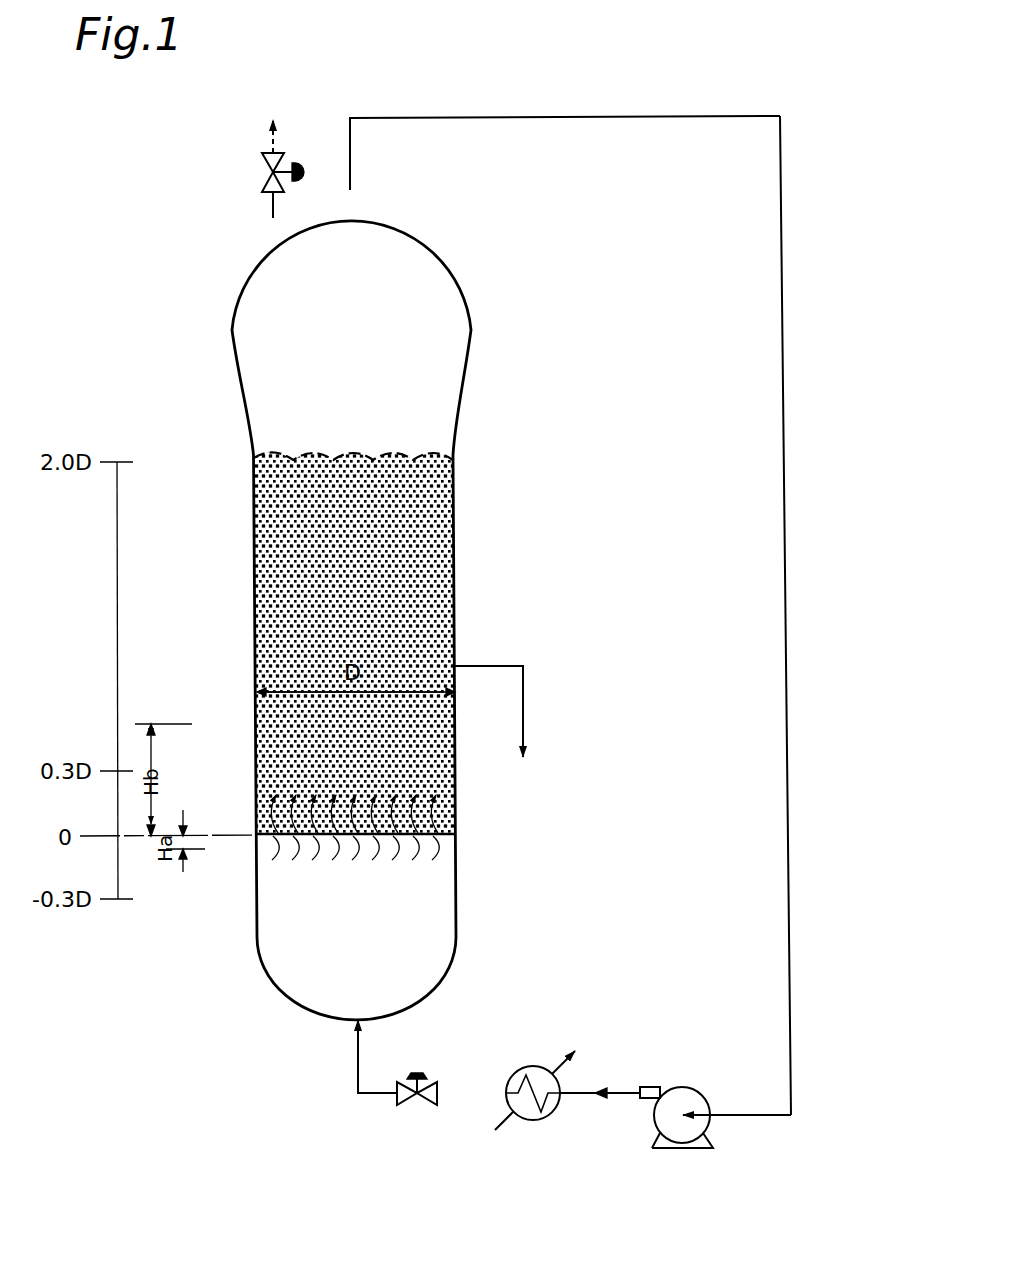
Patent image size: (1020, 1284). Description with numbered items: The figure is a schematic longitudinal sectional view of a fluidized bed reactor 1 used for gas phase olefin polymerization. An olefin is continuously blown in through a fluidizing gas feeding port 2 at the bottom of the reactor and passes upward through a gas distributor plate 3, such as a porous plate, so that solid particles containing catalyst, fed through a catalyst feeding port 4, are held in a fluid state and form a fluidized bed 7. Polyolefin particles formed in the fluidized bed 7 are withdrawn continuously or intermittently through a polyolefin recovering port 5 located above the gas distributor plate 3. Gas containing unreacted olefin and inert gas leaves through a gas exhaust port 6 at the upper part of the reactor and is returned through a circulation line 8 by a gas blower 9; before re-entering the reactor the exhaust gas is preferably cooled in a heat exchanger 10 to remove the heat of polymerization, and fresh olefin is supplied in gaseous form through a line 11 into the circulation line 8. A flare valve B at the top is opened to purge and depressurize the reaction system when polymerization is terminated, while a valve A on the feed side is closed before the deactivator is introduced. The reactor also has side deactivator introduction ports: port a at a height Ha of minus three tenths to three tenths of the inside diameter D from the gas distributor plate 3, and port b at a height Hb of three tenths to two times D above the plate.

The fluidized bed reactor 1 is at (207, 302).
The fluidizing gas feeding port 2 is at (358, 1058).
The gas distributor plate 3 is at (456, 855).
The catalyst feeding port 4 is at (256, 805).
The polyolefin recovering port 5 is at (483, 668).
The gas exhaust port 6 is at (351, 158).
The fluidized bed 7 is at (355, 643).
The circulation line 8 is at (789, 578).
The gas blower 9 is at (692, 1097).
The heat exchanger 10 is at (561, 1105).
The line 11 is at (791, 981).
The valve A is at (410, 1105).
The flare valve B is at (266, 166).
The deactivator introduction port a is at (256, 849).
The deactivator introduction port b is at (256, 724).